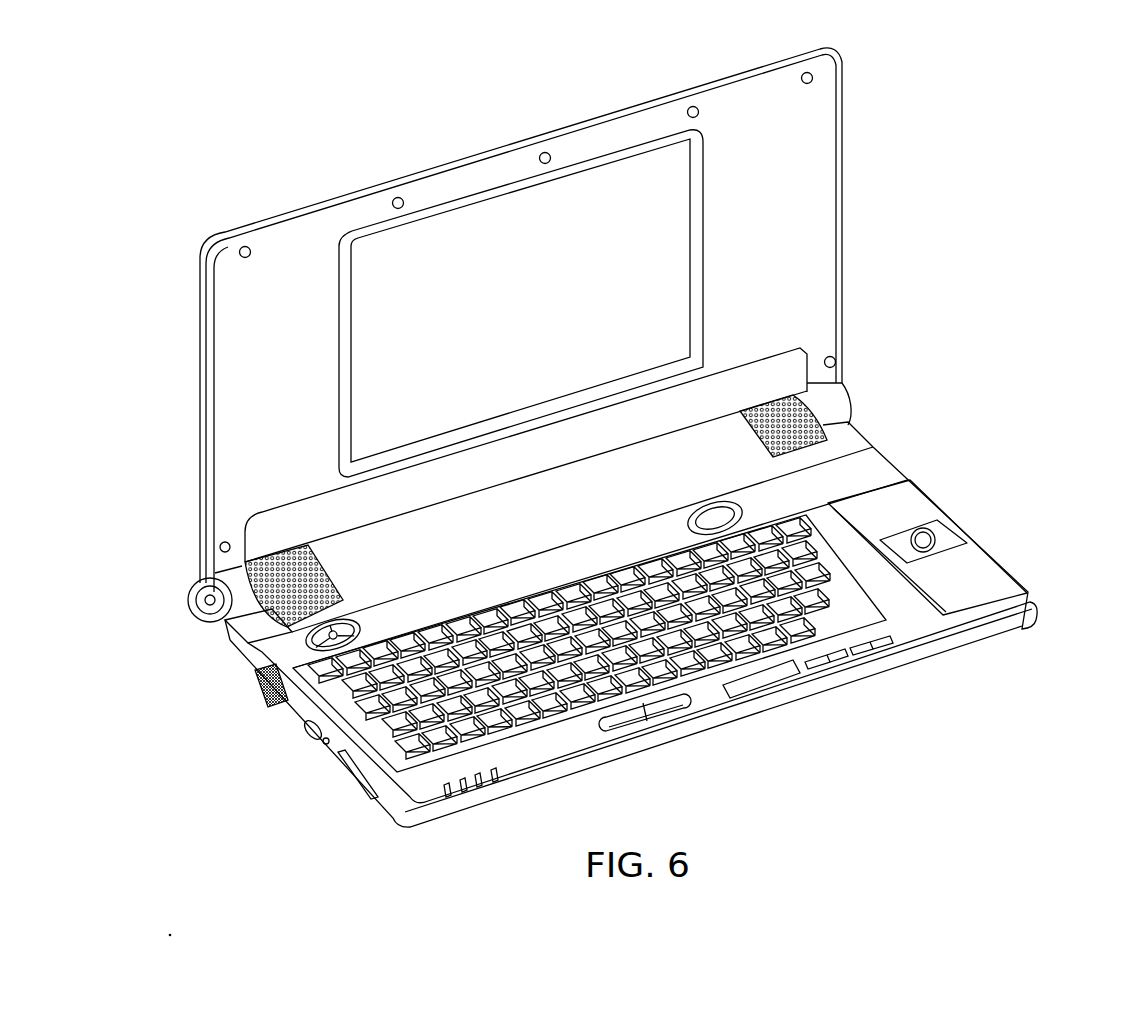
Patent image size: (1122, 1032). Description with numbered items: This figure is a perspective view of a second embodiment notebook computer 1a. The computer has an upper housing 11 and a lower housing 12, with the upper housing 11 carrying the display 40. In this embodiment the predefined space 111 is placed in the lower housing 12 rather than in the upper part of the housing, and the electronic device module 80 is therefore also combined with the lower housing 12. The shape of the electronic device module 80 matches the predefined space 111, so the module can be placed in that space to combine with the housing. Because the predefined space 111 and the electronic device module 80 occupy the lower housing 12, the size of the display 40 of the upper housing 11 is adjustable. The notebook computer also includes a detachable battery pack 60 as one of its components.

The notebook computer 1a is at (958, 159).
The upper housing 11 is at (745, 96).
The display 40 is at (465, 235).
The detachable battery pack 60 is at (356, 558).
The lower housing 12 is at (918, 627).
The predefined space 111 is at (988, 497).
The electronic device module 80 is at (978, 566).